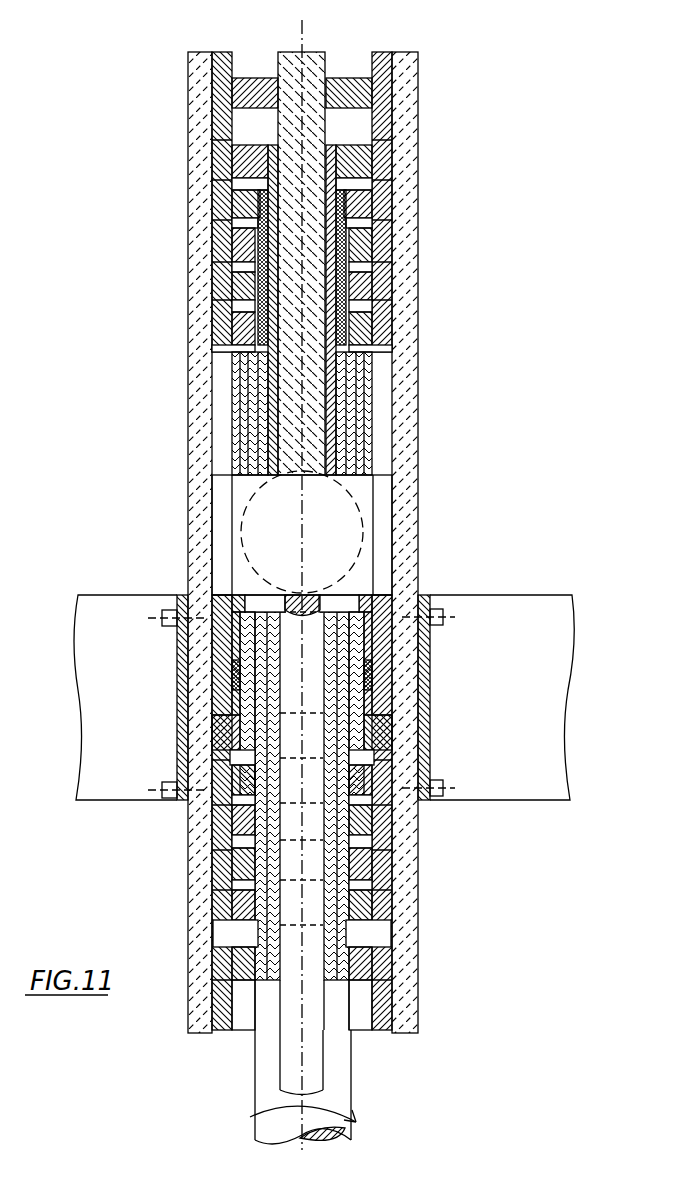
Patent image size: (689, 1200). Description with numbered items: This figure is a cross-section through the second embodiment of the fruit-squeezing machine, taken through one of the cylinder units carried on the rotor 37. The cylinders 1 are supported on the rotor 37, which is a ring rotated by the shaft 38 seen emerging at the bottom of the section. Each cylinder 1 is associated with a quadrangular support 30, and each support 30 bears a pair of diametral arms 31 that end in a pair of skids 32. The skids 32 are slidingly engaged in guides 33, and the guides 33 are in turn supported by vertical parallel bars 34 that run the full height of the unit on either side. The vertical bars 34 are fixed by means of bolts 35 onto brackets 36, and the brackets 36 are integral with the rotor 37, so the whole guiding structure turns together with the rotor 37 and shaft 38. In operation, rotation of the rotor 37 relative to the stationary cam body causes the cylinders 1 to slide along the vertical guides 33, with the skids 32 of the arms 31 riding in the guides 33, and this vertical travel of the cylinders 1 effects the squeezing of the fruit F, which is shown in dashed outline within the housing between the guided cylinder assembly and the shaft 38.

The cylinders 1 is at (340, 436).
The quadrangular supports 30 is at (325, 78).
The diametral arms 31 is at (352, 80).
The skids 32 is at (220, 296).
The guides 33 is at (218, 490).
The vertical parallel bars 34 is at (195, 162).
The bolts 35 is at (445, 791).
The brackets 36 is at (430, 725).
The rotor 37 is at (112, 606).
The shaft 38 is at (345, 1080).
The fruit F is at (360, 516).